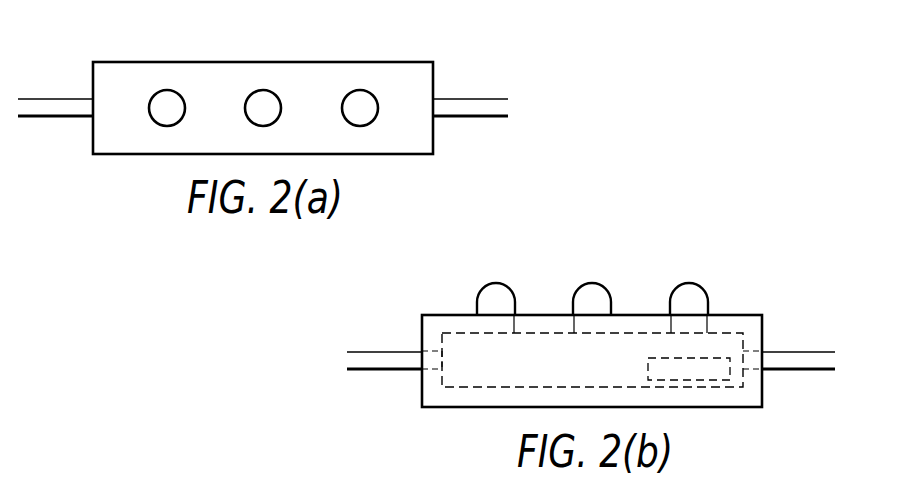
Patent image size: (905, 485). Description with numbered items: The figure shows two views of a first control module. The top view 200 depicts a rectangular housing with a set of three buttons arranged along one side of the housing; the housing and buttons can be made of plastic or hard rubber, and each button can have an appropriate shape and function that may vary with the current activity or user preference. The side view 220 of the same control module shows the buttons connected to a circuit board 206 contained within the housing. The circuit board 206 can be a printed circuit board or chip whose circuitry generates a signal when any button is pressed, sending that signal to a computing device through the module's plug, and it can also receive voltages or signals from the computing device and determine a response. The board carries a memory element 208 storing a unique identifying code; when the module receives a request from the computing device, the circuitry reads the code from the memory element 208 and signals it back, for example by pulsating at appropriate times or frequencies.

The top view 200 is at (468, 76).
The circuit board 206 is at (483, 387).
The memory element 208 is at (695, 380).
The sensor device 220 is at (677, 213).